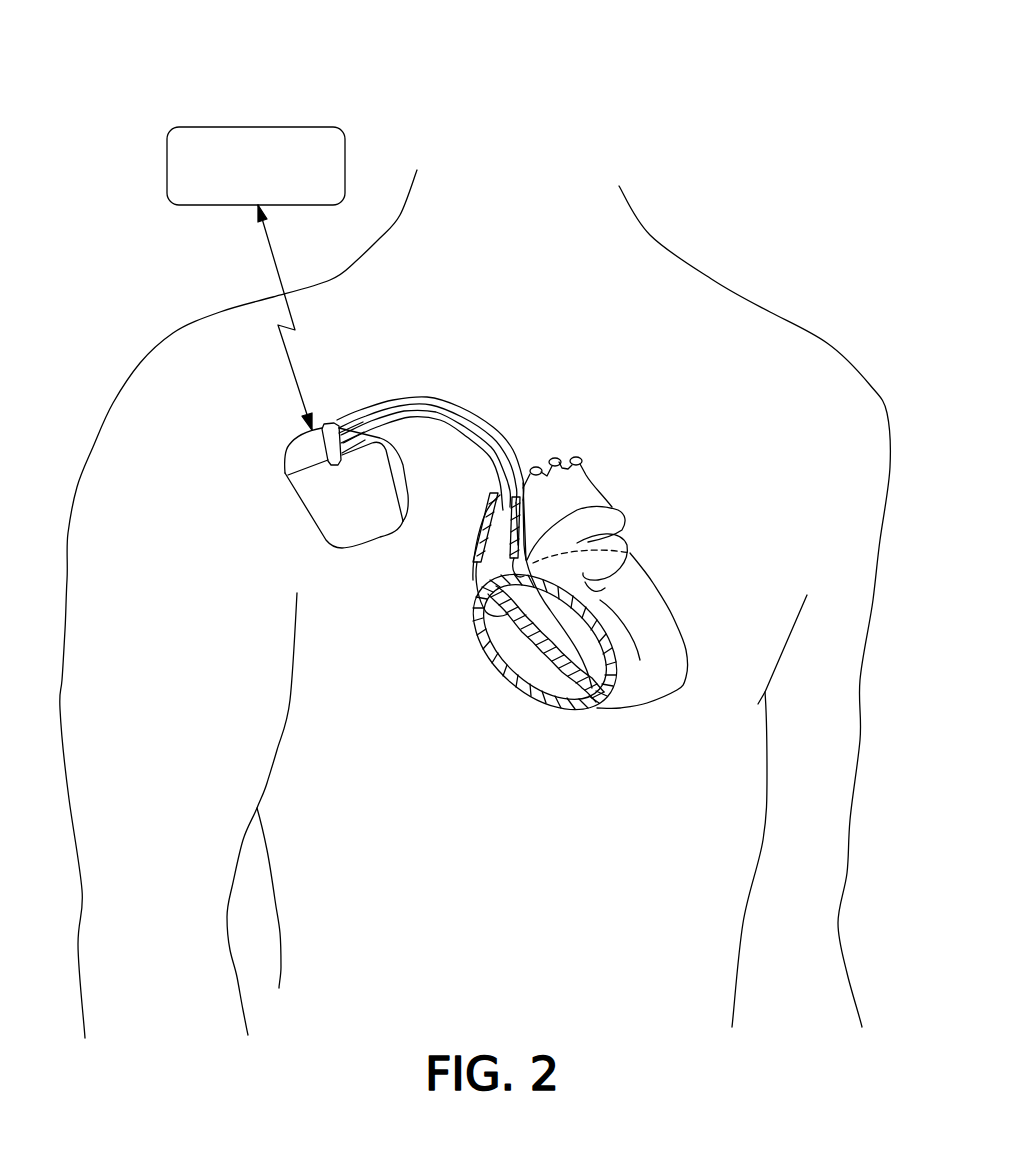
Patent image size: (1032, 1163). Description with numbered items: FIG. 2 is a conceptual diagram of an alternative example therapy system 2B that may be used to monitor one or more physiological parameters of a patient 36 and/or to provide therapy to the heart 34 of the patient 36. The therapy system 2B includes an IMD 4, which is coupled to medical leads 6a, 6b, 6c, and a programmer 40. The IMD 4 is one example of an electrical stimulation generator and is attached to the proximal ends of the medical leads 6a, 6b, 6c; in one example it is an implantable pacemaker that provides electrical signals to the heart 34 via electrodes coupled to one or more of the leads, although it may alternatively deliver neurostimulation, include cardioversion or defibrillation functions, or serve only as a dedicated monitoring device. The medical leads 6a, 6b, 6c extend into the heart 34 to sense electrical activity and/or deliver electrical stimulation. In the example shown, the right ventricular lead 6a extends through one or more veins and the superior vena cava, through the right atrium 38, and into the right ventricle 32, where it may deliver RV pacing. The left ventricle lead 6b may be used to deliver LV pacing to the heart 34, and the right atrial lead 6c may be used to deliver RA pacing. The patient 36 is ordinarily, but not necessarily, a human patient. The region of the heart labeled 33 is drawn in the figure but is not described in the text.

The therapy system 2B is at (635, 92).
The patient 36 is at (738, 290).
The programmer 40 is at (244, 193).
The IMD 4 is at (288, 512).
The right ventricular lead 6a is at (465, 417).
The left ventricle lead 6b is at (517, 448).
The right atrial lead 6c is at (480, 447).
The heart 34 is at (643, 740).
The right ventricle 32 is at (523, 668).
The right atrium 38 is at (492, 595).
The left ventricle 33 is at (660, 633).